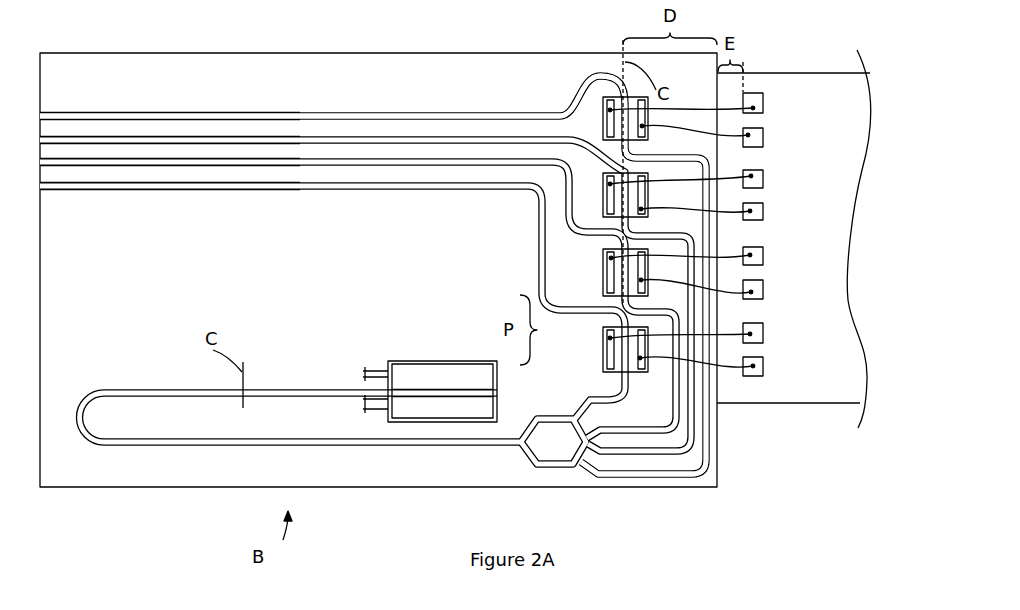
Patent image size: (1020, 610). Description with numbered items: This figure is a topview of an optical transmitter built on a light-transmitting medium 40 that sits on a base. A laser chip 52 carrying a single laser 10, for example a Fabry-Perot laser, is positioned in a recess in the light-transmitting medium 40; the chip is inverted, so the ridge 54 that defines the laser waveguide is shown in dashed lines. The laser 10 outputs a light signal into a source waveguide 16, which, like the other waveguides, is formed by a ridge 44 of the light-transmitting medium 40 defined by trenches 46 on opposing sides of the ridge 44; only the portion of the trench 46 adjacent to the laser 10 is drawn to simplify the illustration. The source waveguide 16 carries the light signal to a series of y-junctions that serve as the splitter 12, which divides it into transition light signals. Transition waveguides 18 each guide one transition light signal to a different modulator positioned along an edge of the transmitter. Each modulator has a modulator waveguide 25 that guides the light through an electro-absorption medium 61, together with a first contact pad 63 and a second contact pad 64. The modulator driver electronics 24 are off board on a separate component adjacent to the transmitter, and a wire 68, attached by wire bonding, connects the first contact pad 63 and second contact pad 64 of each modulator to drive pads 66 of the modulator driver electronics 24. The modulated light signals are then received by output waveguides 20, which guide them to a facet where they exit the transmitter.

The laser 10 is at (416, 366).
The splitter 12 is at (508, 474).
The source waveguide 16 is at (265, 368).
The transition waveguides 18 is at (578, 388).
The output waveguides 20 is at (77, 112).
The modulator driver electronics 24 is at (774, 52).
The modulator waveguide 25 is at (611, 129).
The light-transmitting medium 40 is at (71, 478).
The ridge 44 is at (318, 112).
The trenches 46 is at (368, 368).
The laser chip 52 is at (447, 358).
The ridge 54 is at (392, 366).
The electro-absorption medium 61 is at (602, 105).
The first contact pad 63 is at (603, 145).
The second contact pad 64 is at (646, 136).
The drive pads 66 is at (763, 97).
The wire 68 is at (707, 98).